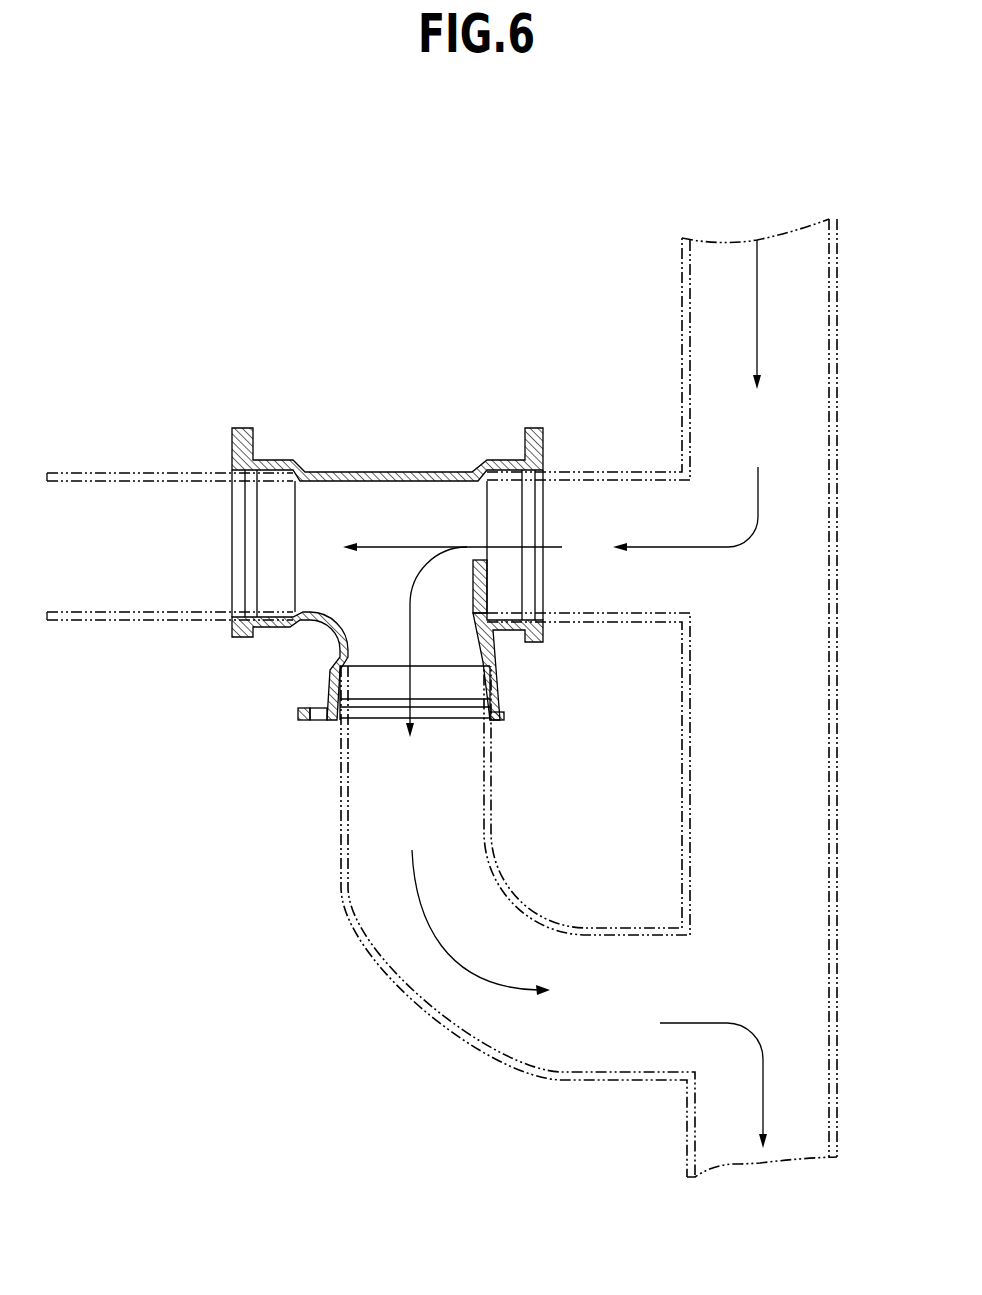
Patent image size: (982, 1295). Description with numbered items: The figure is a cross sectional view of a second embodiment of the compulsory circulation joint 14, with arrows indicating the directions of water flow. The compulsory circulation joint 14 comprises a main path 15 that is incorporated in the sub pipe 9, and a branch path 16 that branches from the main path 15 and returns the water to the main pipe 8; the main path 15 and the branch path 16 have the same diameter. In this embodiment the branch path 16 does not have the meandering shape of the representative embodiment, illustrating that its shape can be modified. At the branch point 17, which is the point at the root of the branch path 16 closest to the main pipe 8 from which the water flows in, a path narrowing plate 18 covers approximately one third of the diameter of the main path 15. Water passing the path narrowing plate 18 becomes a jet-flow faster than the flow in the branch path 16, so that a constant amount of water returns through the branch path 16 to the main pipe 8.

The main pipe 8 is at (838, 557).
The sub pipe 9 is at (82, 473).
The compulsory circulation joint 14 is at (420, 487).
The main path 15 is at (387, 473).
The branch path 16 is at (310, 625).
The branch point 17 is at (478, 629).
The path narrowing plate 18 is at (490, 580).